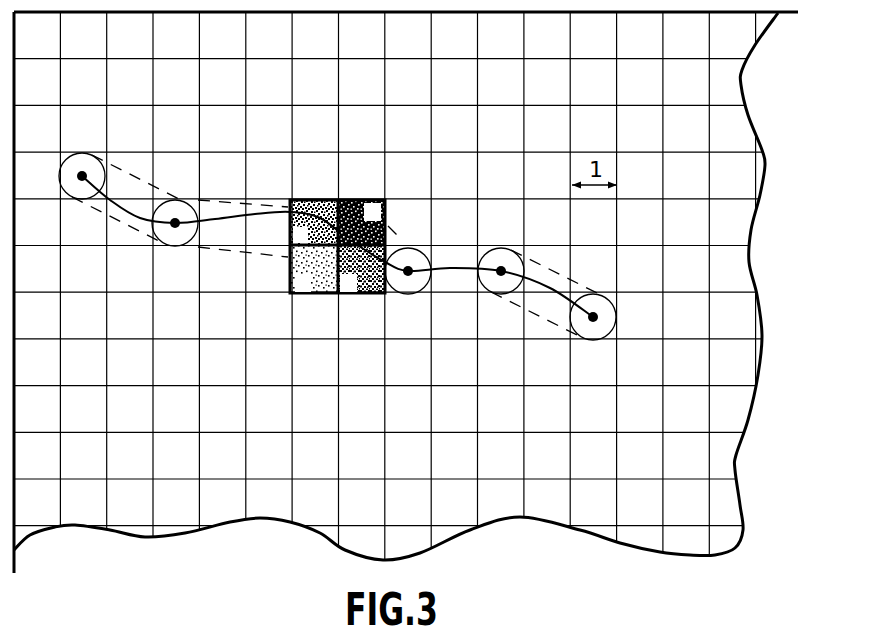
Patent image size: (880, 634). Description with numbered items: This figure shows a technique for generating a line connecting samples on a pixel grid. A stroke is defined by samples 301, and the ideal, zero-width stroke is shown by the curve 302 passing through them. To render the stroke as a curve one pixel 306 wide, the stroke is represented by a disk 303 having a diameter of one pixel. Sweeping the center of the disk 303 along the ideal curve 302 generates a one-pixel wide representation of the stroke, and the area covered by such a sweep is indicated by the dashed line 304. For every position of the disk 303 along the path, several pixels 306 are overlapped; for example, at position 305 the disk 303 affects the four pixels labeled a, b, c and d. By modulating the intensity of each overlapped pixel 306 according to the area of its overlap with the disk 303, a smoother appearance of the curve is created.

The samples 301 is at (83, 175).
The curve 302 is at (238, 222).
The disk 303 is at (70, 181).
The dashed line 304 is at (230, 252).
The position 305 is at (358, 199).
The pixel 306 is at (398, 242).